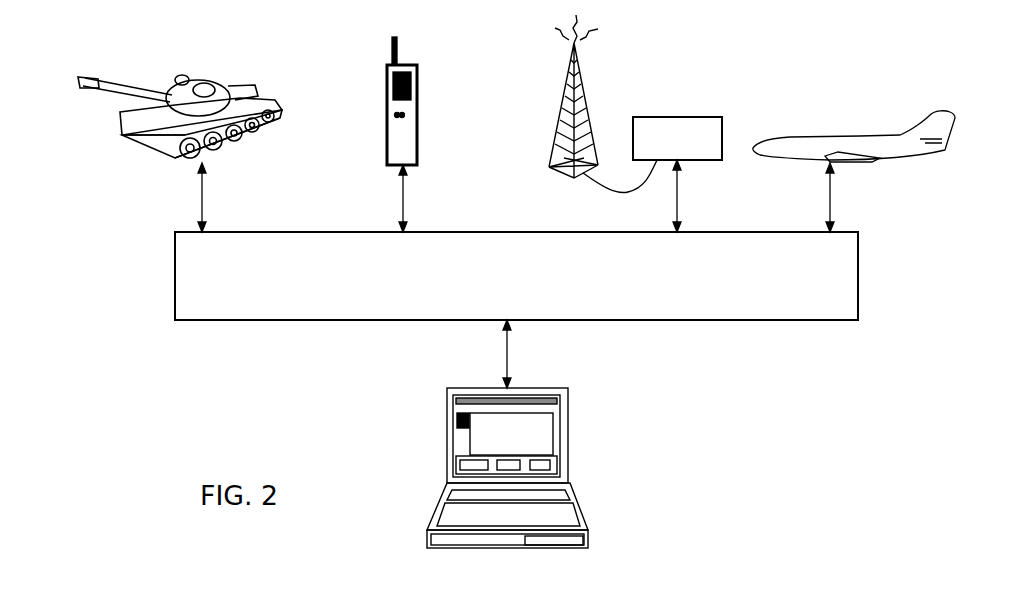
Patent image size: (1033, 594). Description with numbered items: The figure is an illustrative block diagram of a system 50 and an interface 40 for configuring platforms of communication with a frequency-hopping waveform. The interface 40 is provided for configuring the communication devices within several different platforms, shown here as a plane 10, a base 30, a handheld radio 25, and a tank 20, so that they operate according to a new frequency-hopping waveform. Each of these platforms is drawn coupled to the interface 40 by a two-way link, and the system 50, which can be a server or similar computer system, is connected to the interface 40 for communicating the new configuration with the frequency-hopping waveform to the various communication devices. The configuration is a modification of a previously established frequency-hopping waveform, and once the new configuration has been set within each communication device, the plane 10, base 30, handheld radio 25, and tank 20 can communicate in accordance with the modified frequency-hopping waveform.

The plane 10 is at (829, 110).
The tank 20 is at (156, 168).
The handheld radio 25 is at (355, 100).
The base 30 is at (535, 108).
The interface 40 is at (608, 295).
The system 50 is at (600, 487).